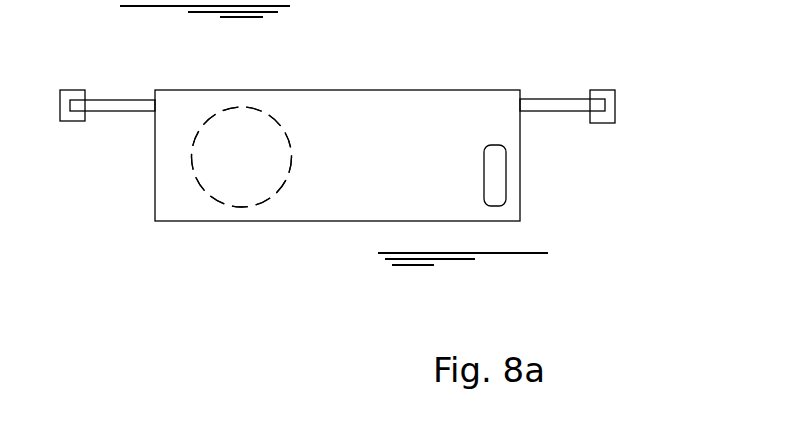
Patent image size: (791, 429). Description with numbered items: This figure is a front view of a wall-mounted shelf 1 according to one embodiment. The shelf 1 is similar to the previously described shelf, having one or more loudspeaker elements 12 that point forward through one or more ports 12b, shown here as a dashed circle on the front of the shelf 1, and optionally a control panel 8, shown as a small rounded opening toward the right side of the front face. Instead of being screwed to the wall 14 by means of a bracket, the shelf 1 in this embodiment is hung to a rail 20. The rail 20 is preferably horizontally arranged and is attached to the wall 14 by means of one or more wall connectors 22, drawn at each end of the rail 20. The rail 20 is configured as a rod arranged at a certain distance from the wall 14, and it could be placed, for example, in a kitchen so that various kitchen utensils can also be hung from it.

The shelf 1 is at (302, 215).
The control panel 8 is at (506, 180).
The loudspeaker element 12 is at (257, 151).
The port 12b is at (242, 157).
The wall 14 is at (76, 45).
The rail 20 is at (554, 99).
The wall connector 22 is at (71, 121).